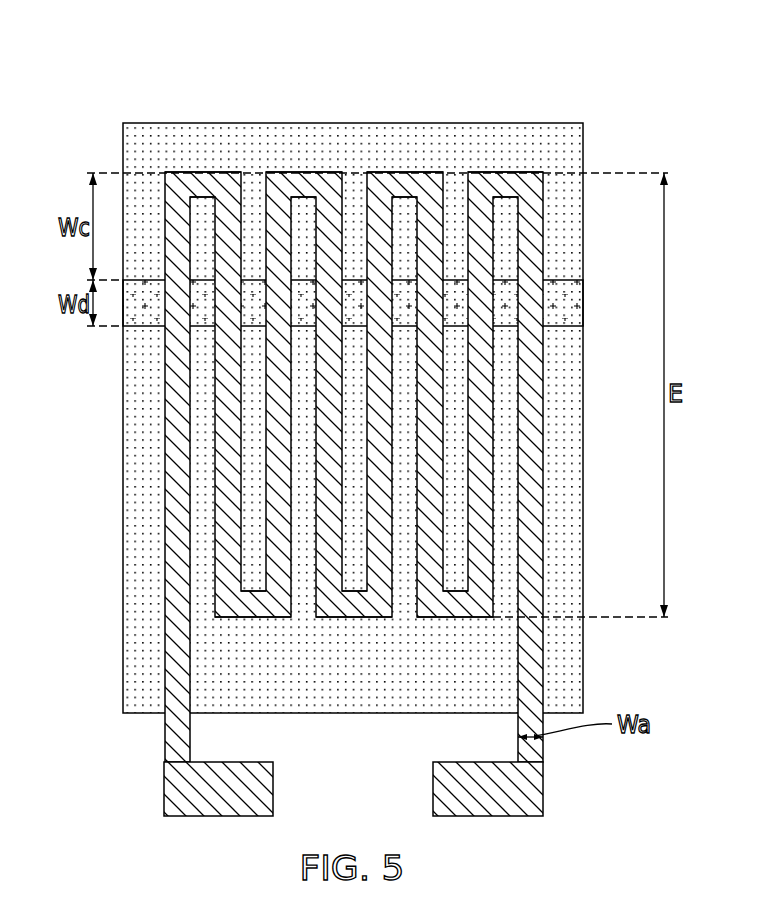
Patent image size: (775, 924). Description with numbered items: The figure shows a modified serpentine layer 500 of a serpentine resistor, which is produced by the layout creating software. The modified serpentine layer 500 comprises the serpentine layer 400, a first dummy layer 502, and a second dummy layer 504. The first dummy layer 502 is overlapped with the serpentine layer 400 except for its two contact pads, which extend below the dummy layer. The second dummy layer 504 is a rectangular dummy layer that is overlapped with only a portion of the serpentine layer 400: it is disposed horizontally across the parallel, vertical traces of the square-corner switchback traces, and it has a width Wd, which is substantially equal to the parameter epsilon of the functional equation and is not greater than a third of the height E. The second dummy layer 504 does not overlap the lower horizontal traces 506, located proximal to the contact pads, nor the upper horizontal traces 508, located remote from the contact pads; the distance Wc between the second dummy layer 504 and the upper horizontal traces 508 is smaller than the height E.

The modified serpentine layer 500 is at (445, 433).
The first dummy layer 502 is at (575, 138).
The second dummy layer 504 is at (575, 303).
The serpentine layer 400 is at (535, 500).
The lower horizontal traces 506 is at (254, 603).
The upper horizontal traces 508 is at (205, 185).